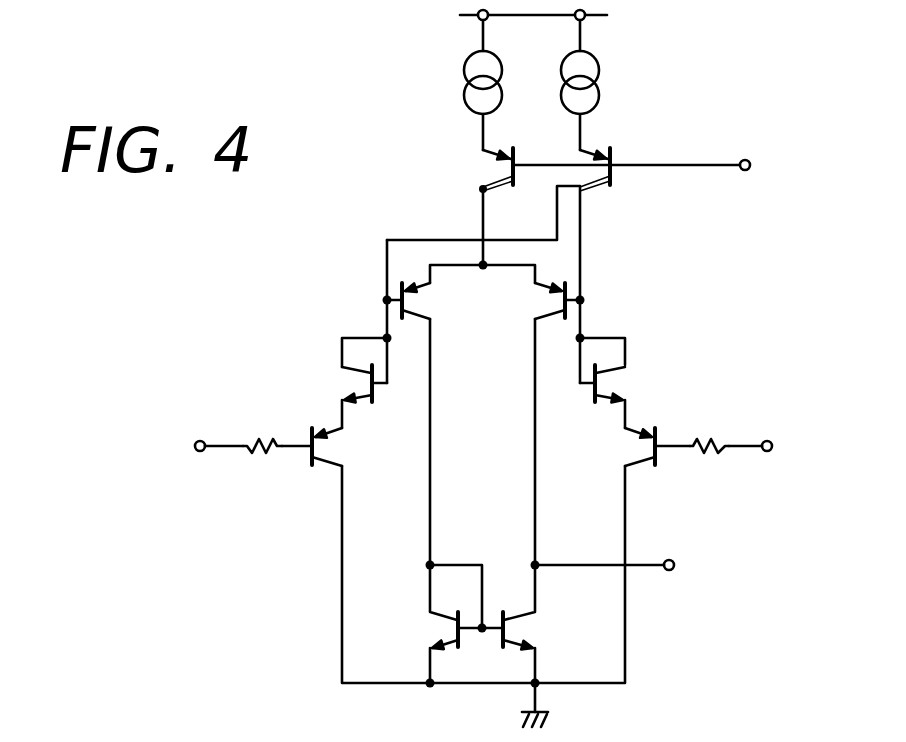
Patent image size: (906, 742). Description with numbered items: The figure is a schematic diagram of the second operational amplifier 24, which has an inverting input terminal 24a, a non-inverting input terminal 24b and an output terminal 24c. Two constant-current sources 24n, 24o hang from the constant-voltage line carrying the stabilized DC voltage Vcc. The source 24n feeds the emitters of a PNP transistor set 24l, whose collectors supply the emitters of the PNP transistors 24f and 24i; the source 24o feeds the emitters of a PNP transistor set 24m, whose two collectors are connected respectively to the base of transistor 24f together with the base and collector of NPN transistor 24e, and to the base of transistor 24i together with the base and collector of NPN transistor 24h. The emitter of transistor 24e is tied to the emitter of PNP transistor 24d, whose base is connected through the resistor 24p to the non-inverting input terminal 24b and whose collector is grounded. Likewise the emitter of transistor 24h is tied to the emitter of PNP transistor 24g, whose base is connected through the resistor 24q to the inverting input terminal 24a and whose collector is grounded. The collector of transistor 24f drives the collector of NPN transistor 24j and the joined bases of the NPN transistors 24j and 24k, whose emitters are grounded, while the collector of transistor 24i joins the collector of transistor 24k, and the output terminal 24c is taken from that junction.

The operational amplifier 24 is at (741, 62).
The inverting input terminal 24a is at (764, 439).
The non-inverting input terminal 24b is at (199, 438).
The output terminal 24c is at (676, 565).
The PNP transistor 24d is at (337, 446).
The NPN transistor 24e is at (343, 383).
The PNP transistor 24f is at (425, 305).
The PNP transistor 24g is at (631, 447).
The NPN transistor 24h is at (623, 383).
The PNP transistor 24i is at (547, 299).
The NPN transistor 24j is at (434, 628).
The NPN transistor 24k is at (534, 626).
The PNP transistor set 24l is at (490, 163).
The PNP transistor set 24m is at (615, 186).
The constant-current source 24n is at (465, 64).
The constant-current source 24o is at (604, 64).
The resistor 24p is at (261, 435).
The resistor 24q is at (705, 435).